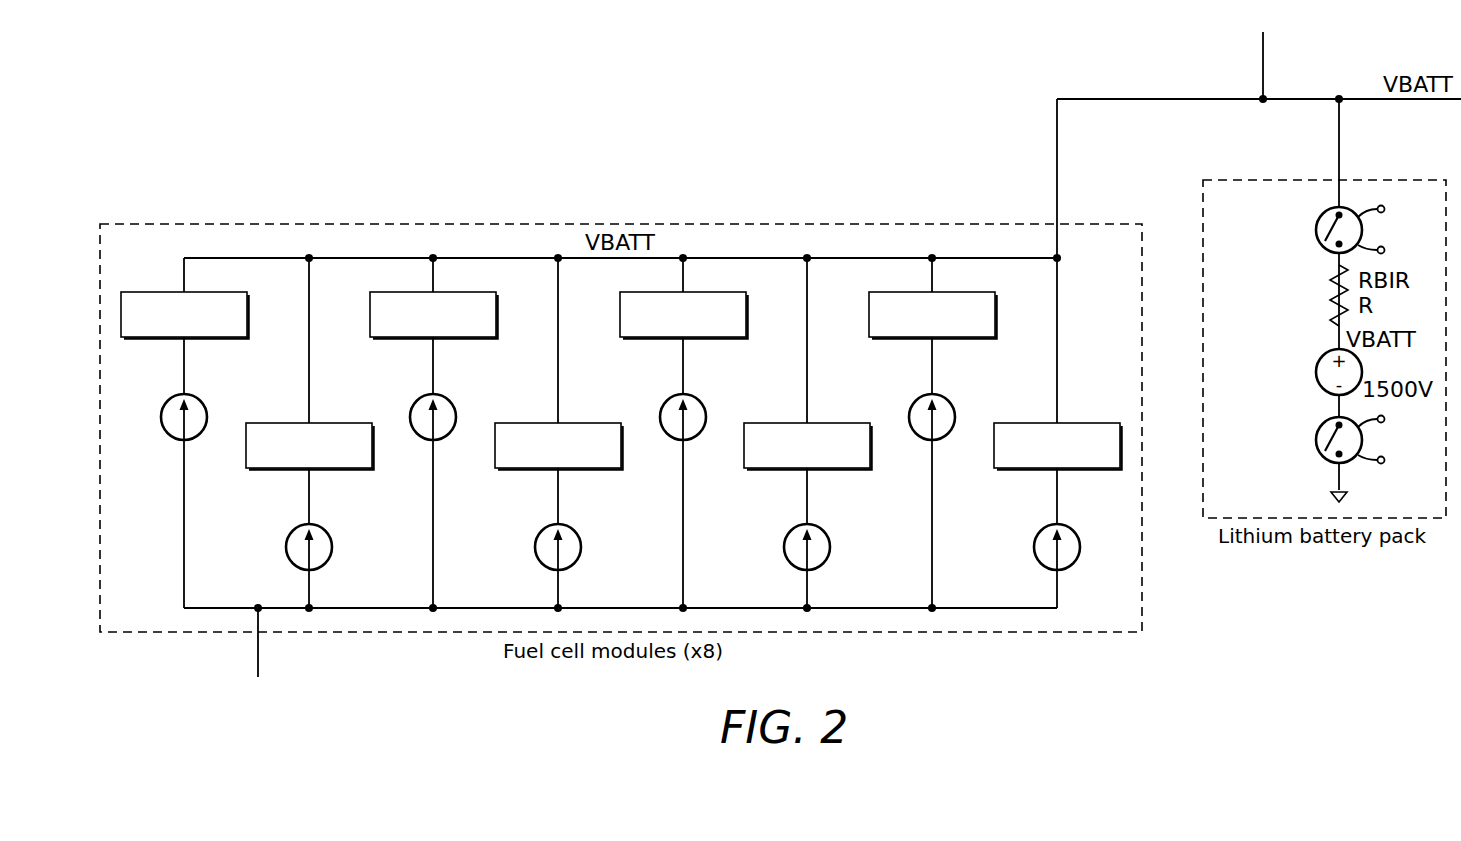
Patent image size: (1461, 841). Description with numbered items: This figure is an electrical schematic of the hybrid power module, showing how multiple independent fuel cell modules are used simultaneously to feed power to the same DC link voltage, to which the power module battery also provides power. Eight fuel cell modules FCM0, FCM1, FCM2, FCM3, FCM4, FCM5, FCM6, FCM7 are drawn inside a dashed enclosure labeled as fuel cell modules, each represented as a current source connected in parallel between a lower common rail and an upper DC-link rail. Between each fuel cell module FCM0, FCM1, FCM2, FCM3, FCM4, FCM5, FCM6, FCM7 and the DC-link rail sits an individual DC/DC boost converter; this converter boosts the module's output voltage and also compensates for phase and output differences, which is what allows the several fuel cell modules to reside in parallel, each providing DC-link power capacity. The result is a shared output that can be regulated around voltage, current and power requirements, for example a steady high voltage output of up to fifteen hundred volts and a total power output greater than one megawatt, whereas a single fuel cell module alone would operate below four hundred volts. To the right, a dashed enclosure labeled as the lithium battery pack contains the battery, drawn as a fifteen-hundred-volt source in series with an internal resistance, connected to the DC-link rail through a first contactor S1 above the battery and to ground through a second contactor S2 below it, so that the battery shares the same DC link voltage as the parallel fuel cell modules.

The fuel cell module 0 FCM0 is at (183, 433).
The fuel cell module 1 FCM1 is at (432, 433).
The fuel cell module 2 FCM2 is at (682, 433).
The fuel cell module 3 FCM3 is at (931, 433).
The fuel cell module 4 FCM4 is at (308, 433).
The fuel cell module 5 FCM5 is at (557, 433).
The fuel cell module 6 FCM6 is at (806, 433).
The fuel cell module 7 FCM7 is at (1056, 433).
The contactor S1 is at (1319, 230).
The contactor S2 is at (1319, 438).